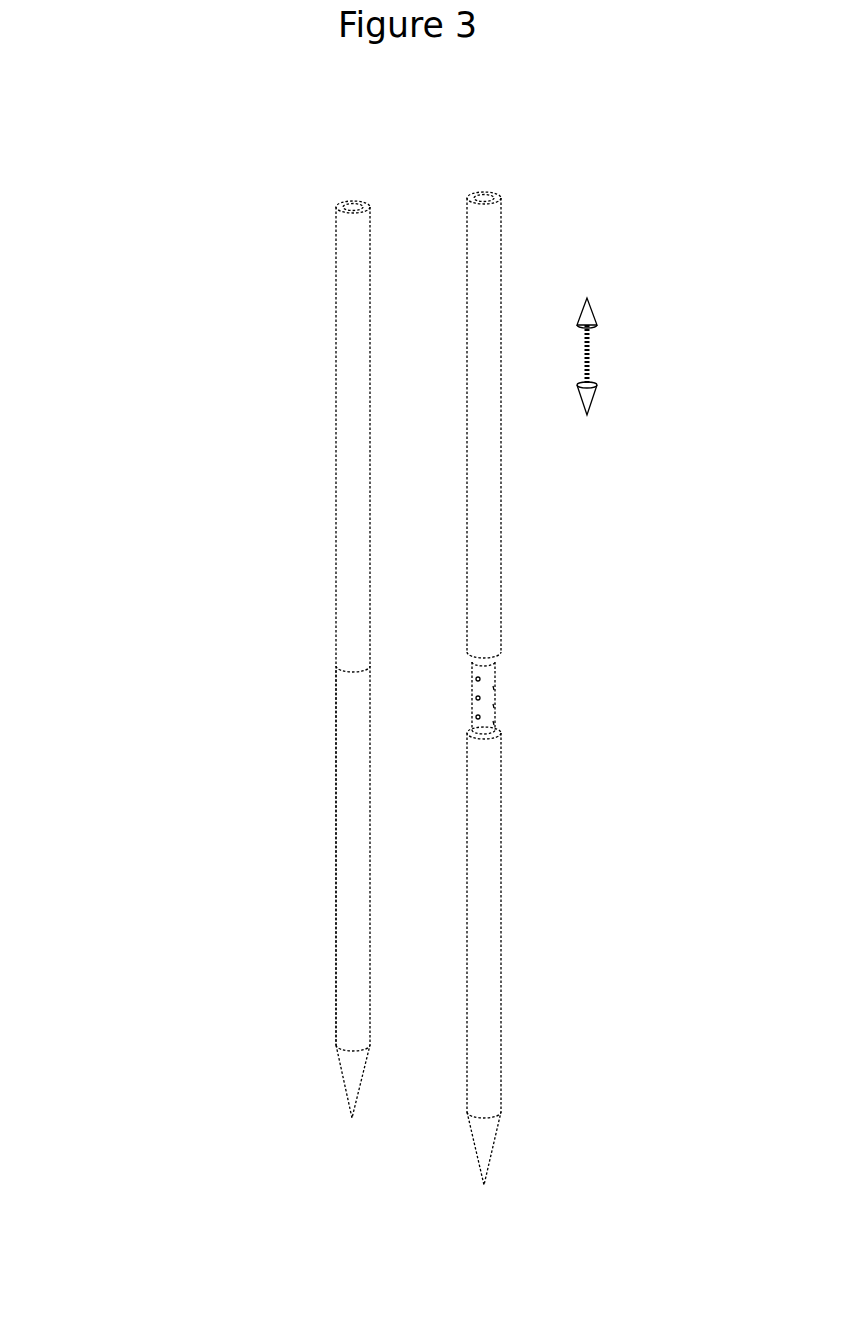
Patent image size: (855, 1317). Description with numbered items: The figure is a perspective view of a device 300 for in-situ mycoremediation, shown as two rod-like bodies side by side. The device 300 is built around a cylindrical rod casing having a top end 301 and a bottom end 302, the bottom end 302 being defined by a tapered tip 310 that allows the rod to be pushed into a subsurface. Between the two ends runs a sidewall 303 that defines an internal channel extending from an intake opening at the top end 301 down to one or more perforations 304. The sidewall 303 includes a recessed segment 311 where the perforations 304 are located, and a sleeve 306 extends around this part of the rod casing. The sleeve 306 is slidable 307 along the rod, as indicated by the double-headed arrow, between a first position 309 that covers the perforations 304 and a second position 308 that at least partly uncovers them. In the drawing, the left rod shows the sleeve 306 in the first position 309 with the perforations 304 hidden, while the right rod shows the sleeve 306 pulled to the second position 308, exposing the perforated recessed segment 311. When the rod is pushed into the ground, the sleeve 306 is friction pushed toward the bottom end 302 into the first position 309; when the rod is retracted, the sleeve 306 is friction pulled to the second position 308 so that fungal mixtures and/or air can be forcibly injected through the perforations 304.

The device for in-situ mycoremediation 300 is at (158, 62).
The top end 301 is at (373, 206).
The bottom end 302 is at (338, 1108).
The sidewall 303 is at (313, 621).
The perforations 304 is at (494, 693).
The sleeve 306 is at (500, 598).
The slidable movement 307 is at (598, 362).
The second position 308 is at (507, 722).
The first position 309 is at (336, 325).
The tapered tip 310 is at (352, 1059).
The recessed segment 311 is at (460, 702).